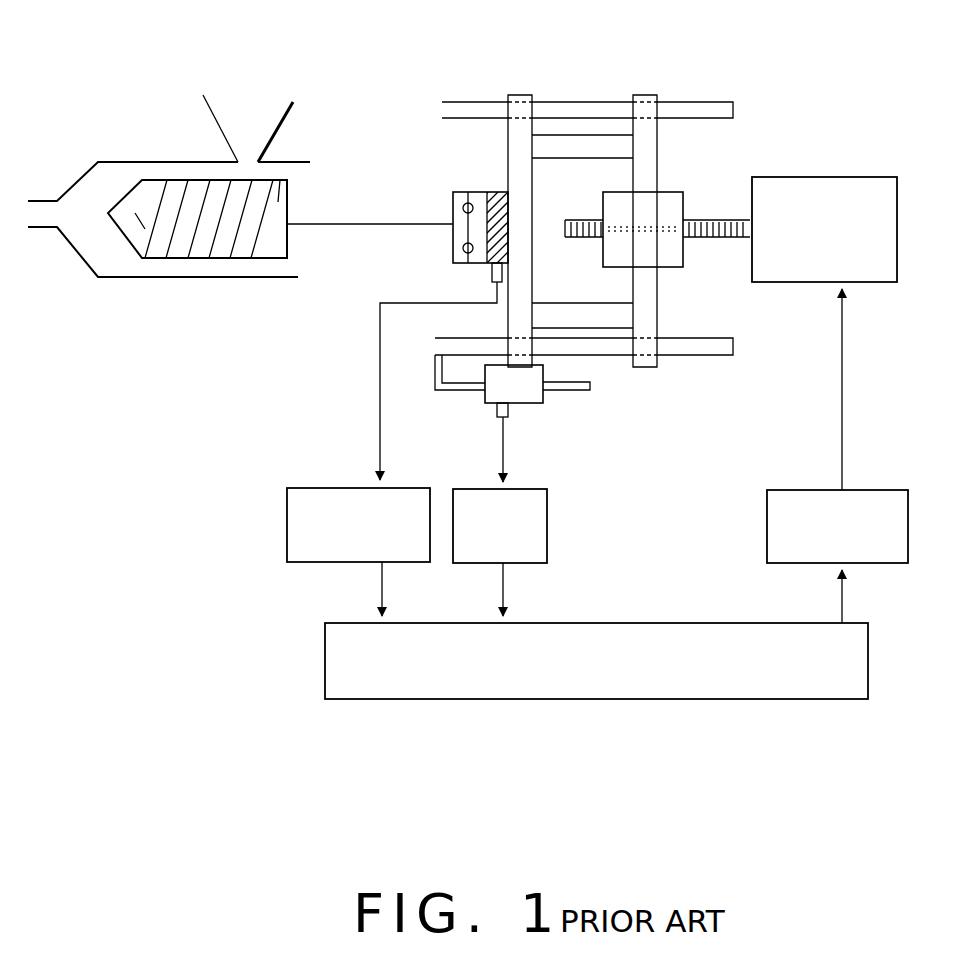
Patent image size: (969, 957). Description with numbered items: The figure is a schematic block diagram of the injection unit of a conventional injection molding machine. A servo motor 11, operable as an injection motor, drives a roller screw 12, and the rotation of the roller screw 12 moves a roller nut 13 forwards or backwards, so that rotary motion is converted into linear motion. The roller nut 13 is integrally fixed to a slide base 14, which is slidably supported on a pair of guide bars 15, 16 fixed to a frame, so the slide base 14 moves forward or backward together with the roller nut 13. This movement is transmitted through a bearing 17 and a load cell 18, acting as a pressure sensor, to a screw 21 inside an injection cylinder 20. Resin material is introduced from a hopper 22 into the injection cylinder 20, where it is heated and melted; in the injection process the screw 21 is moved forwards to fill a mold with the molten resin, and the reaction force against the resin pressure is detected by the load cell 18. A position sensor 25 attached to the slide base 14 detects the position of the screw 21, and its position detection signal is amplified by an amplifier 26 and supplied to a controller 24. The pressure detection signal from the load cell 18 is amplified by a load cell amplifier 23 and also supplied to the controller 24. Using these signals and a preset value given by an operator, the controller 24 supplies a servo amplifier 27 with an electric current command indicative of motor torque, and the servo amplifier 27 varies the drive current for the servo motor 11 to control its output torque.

The servo motor 11 is at (855, 177).
The roller screw 12 is at (727, 222).
The roller nut 13 is at (676, 192).
The slide base 14 is at (650, 293).
The guide bar 15 is at (457, 101).
The guide bar 16 is at (713, 355).
The bearing 17 is at (453, 200).
The load cell 18 is at (497, 192).
The injection cylinder 20 is at (127, 277).
The screw 21 is at (257, 258).
The hopper 22 is at (293, 105).
The load cell amplifier 23 is at (287, 525).
The controller 24 is at (325, 655).
The position sensor 25 is at (528, 405).
The amplifier 26 is at (547, 533).
The servo amplifier 27 is at (767, 525).